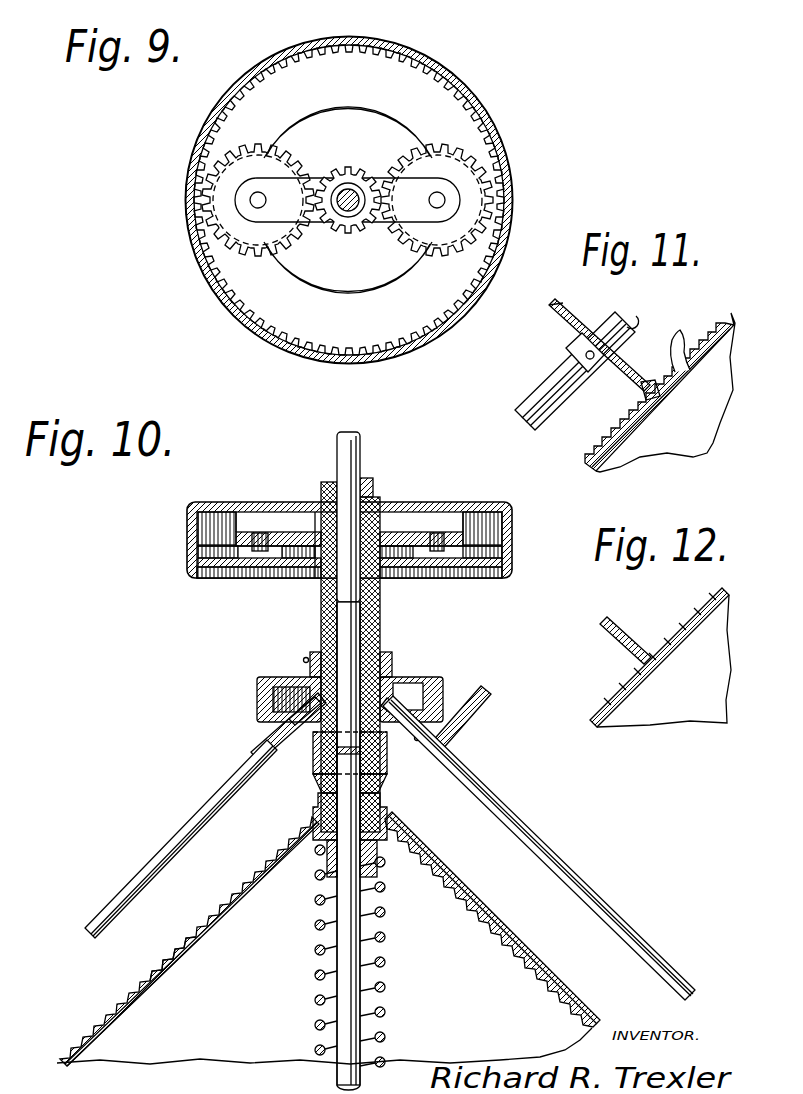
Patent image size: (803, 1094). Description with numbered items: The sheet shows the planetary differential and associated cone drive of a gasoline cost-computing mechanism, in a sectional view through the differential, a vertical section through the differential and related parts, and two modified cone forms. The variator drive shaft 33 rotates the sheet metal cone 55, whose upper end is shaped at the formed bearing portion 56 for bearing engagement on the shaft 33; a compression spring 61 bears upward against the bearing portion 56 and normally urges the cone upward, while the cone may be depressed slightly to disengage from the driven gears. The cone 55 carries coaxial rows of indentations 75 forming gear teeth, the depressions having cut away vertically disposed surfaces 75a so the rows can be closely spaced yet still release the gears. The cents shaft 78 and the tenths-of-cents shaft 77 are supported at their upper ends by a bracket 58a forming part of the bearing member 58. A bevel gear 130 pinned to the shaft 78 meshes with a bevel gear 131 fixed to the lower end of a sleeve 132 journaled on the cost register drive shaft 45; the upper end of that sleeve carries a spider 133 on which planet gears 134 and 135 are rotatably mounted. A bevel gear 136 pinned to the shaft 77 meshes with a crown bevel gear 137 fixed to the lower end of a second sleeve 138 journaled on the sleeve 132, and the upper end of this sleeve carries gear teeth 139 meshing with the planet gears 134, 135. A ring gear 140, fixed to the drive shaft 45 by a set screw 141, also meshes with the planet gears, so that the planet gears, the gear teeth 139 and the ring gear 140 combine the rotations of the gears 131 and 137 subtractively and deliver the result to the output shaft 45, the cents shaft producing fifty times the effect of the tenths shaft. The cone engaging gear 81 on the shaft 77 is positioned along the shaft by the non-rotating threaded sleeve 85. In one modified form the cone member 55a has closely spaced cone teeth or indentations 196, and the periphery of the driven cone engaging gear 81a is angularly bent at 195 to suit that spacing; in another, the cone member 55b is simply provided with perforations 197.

In FIG. 9, the ring gear 140 is at (487, 102).
In FIG. 10, the ring gear 140 is at (187, 535).
In FIG. 9, the spider 133 is at (298, 187).
In FIG. 10, the spider 133 is at (397, 527).
In FIG. 9, the planet gear 134 is at (448, 238).
In FIG. 10, the planet gear 134 is at (482, 563).
In FIG. 9, the planet gear 135 is at (252, 247).
In FIG. 10, the planet gear 135 is at (222, 580).
In FIG. 9, the gear teeth 139 is at (343, 228).
In FIG. 10, the gear teeth 139 is at (308, 577).
In FIG. 9, the cost register drive shaft 45 is at (350, 212).
In FIG. 10, the cost register drive shaft 45 is at (337, 450).
In FIG. 10, the set screw 141 is at (373, 487).
In FIG. 10, the sleeve 132 is at (381, 617).
In FIG. 10, the sleeve 138 is at (321, 620).
In FIG. 10, the crown bevel gear 137 is at (262, 678).
In FIG. 10, the bracket 58a is at (372, 700).
In FIG. 10, the bevel gear 136 is at (263, 747).
In FIG. 10, the bevel gear 130 is at (474, 722).
In FIG. 10, the shaft 77 is at (232, 790).
In FIG. 11, the shaft 77 is at (620, 320).
In FIG. 10, the shaft 78 is at (474, 787).
In FIG. 10, the bearing member 58 is at (313, 777).
In FIG. 10, the bevel gear 131 is at (313, 798).
In FIG. 10, the formed bearing portion 56 is at (383, 880).
In FIG. 10, the indentations 75 is at (212, 885).
In FIG. 10, the cut away vertically disposed surfaces 75a is at (160, 958).
In FIG. 10, the sheet metal cone 55 is at (138, 1000).
In FIG. 10, the compression spring 61 is at (386, 938).
In FIG. 10, the variator drive shaft 33 is at (380, 1020).
In FIG. 11, the cone member 55a is at (670, 455).
In FIG. 11, the threaded sleeve 85 is at (535, 397).
In FIG. 11, the cone engaging gear 81a is at (565, 325).
In FIG. 11, the angularly bent periphery 195 is at (645, 393).
In FIG. 11, the cone teeth or indentations 196 is at (690, 345).
In FIG. 12, the cone member 55b is at (678, 710).
In FIG. 12, the cone engaging gear 81 is at (623, 642).
In FIG. 12, the perforations 197 is at (680, 625).